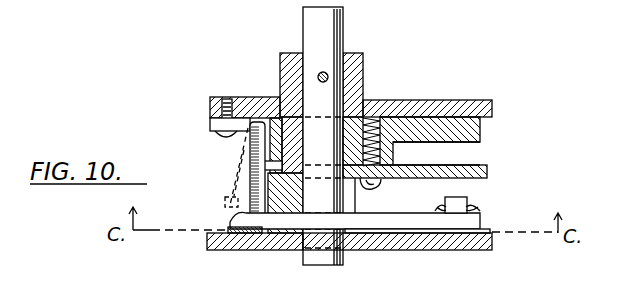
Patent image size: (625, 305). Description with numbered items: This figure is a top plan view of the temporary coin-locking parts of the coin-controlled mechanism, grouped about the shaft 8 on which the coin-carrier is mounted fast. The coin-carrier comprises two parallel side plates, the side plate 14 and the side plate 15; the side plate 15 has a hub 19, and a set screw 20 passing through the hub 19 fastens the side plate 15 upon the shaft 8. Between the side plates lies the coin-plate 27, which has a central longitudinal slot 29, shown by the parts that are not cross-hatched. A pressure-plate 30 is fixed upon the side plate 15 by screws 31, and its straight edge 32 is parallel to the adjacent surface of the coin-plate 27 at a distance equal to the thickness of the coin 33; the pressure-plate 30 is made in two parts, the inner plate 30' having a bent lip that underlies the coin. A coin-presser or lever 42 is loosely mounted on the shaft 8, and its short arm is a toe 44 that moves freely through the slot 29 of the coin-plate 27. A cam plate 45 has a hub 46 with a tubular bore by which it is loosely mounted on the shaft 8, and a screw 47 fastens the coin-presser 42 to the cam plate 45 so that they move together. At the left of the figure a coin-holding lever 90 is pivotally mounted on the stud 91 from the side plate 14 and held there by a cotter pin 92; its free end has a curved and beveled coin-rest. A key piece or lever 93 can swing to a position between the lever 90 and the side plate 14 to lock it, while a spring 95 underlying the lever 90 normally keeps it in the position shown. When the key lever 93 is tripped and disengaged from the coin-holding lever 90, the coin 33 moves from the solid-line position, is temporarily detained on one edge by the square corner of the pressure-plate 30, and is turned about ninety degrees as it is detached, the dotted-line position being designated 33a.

The shaft 8 is at (330, 261).
The side plate 14 is at (492, 250).
The side plate 15 is at (493, 111).
The hub 19 is at (366, 79).
The set screw 20 is at (327, 73).
The coin-plate 27 is at (278, 117).
The central longitudinal slot 29 is at (288, 252).
The pressure-plate 30 is at (203, 125).
The inner plate 30' is at (180, 105).
The screws 31 is at (226, 136).
The straight edge 32 is at (242, 112).
The coin 33 is at (252, 186).
The coin in dotted-line position 33a is at (228, 200).
The coin-presser or lever 42 is at (488, 170).
The toe 44 is at (265, 167).
The cam plate 45 is at (482, 137).
The hub 46 is at (394, 153).
The screw 47 is at (372, 196).
The coin-holding lever 90 is at (240, 220).
The stud 91 is at (466, 198).
The cotter pin 92 is at (470, 207).
The key piece or lever 93 is at (241, 235).
The spring 95 is at (387, 233).